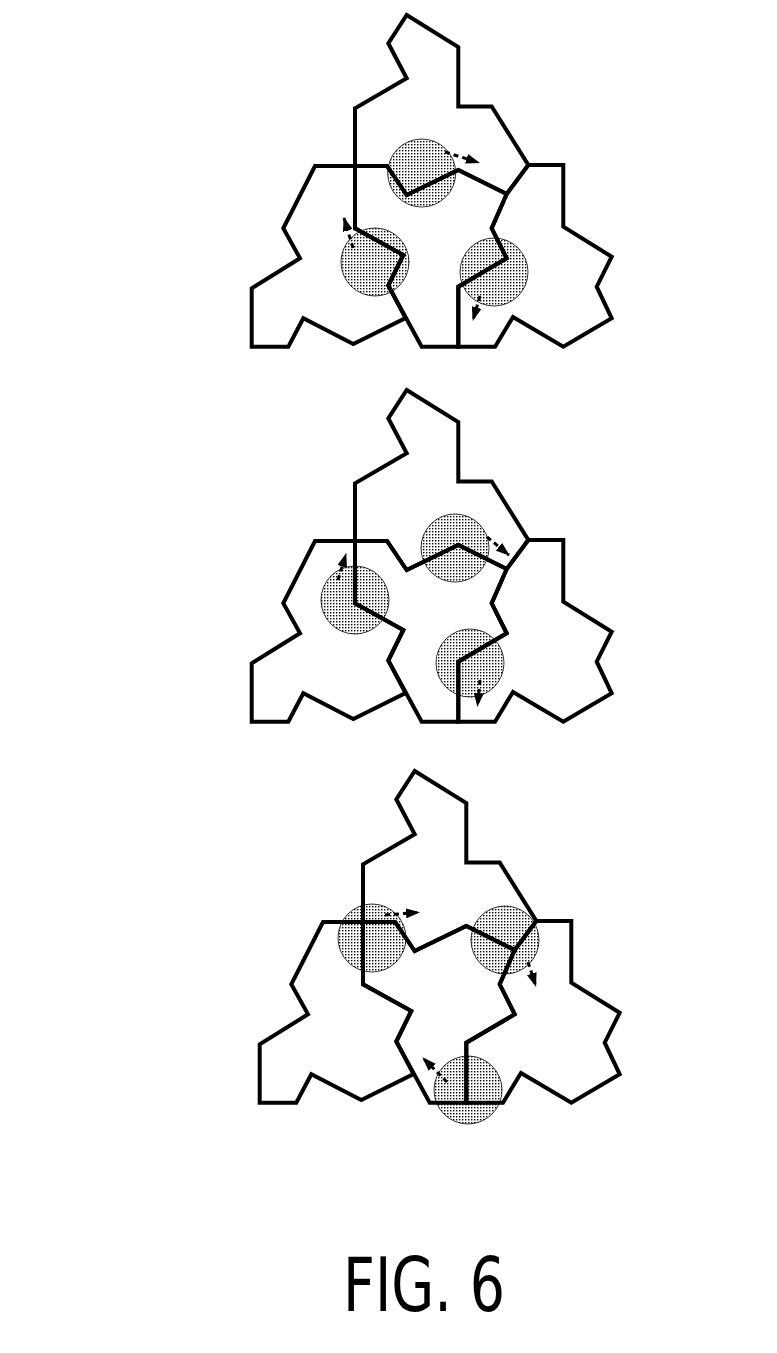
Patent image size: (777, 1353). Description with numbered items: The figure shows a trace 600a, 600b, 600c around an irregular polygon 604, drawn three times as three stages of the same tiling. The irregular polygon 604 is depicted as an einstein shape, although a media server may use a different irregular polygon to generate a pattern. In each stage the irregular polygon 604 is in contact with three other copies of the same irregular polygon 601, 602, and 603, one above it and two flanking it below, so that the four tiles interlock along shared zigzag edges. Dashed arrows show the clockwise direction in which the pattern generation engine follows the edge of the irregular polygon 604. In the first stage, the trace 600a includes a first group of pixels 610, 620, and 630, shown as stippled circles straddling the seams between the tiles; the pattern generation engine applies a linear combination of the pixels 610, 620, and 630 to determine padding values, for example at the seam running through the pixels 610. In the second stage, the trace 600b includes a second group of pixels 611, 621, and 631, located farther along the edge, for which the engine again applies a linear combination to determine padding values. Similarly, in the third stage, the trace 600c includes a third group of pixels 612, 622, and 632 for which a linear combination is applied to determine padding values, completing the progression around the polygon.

The trace 600a is at (122, 228).
The trace 600b is at (122, 604).
The trace 600c is at (122, 984).
The irregular polygon 601 is at (388, 38).
The irregular polygon 602 is at (610, 307).
The irregular polygon 603 is at (252, 291).
The irregular polygon 604 is at (448, 349).
The pixels 610 is at (438, 137).
The pixels 611 is at (480, 523).
The pixels 612 is at (515, 908).
The pixels 620 is at (525, 258).
The pixels 621 is at (503, 647).
The pixels 622 is at (493, 1117).
The pixels 630 is at (351, 248).
The pixels 631 is at (325, 612).
The pixels 632 is at (348, 915).